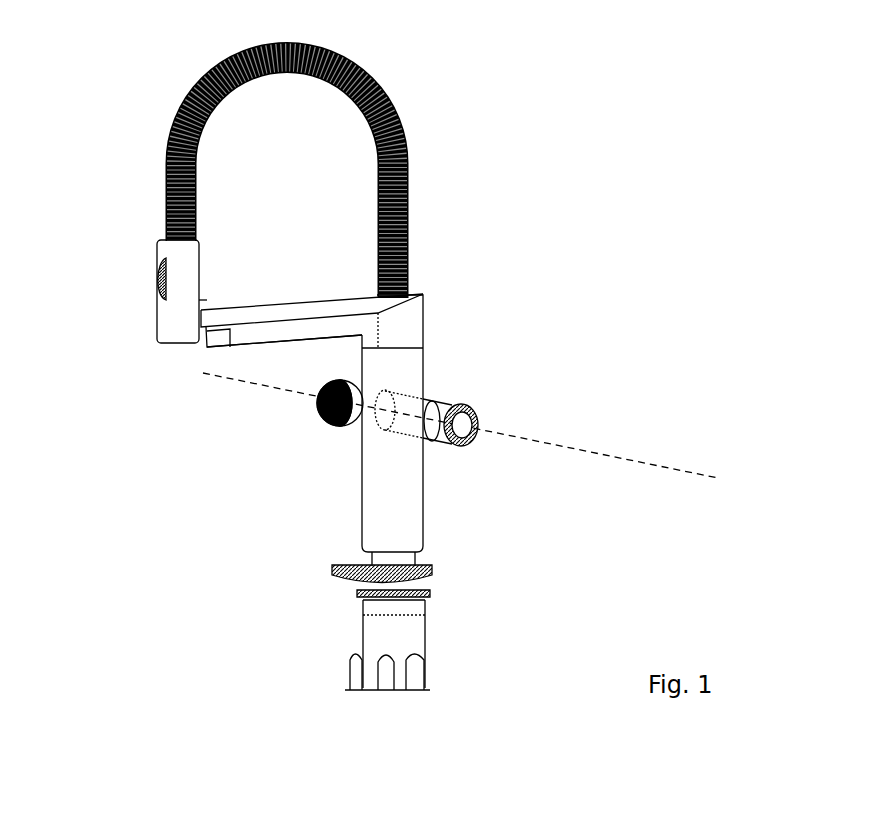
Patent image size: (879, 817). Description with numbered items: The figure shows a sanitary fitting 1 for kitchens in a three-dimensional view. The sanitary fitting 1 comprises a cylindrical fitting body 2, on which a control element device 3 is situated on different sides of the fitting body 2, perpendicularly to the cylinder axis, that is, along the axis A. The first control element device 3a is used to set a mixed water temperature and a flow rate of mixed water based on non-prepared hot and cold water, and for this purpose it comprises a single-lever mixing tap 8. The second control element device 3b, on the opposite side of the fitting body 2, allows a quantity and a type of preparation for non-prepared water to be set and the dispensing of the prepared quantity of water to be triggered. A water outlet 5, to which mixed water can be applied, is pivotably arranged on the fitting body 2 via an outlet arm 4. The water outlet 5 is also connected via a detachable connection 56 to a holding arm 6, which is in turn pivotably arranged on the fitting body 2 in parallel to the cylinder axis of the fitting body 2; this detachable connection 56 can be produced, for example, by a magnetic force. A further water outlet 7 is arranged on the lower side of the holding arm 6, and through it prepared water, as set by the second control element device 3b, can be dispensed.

The sanitary fitting 1 is at (668, 215).
The fitting body 2 is at (427, 527).
The control element device 3 is at (398, 432).
The first control element device 3a is at (388, 440).
The second control element device 3b is at (333, 437).
The outlet arm 4 is at (377, 78).
The water outlet 5 is at (153, 308).
The detachable connection 56 is at (210, 296).
The holding arm 6 is at (258, 302).
The further water outlet 7 is at (233, 352).
The single-lever mixing tap 8 is at (485, 403).
The axis A is at (667, 467).